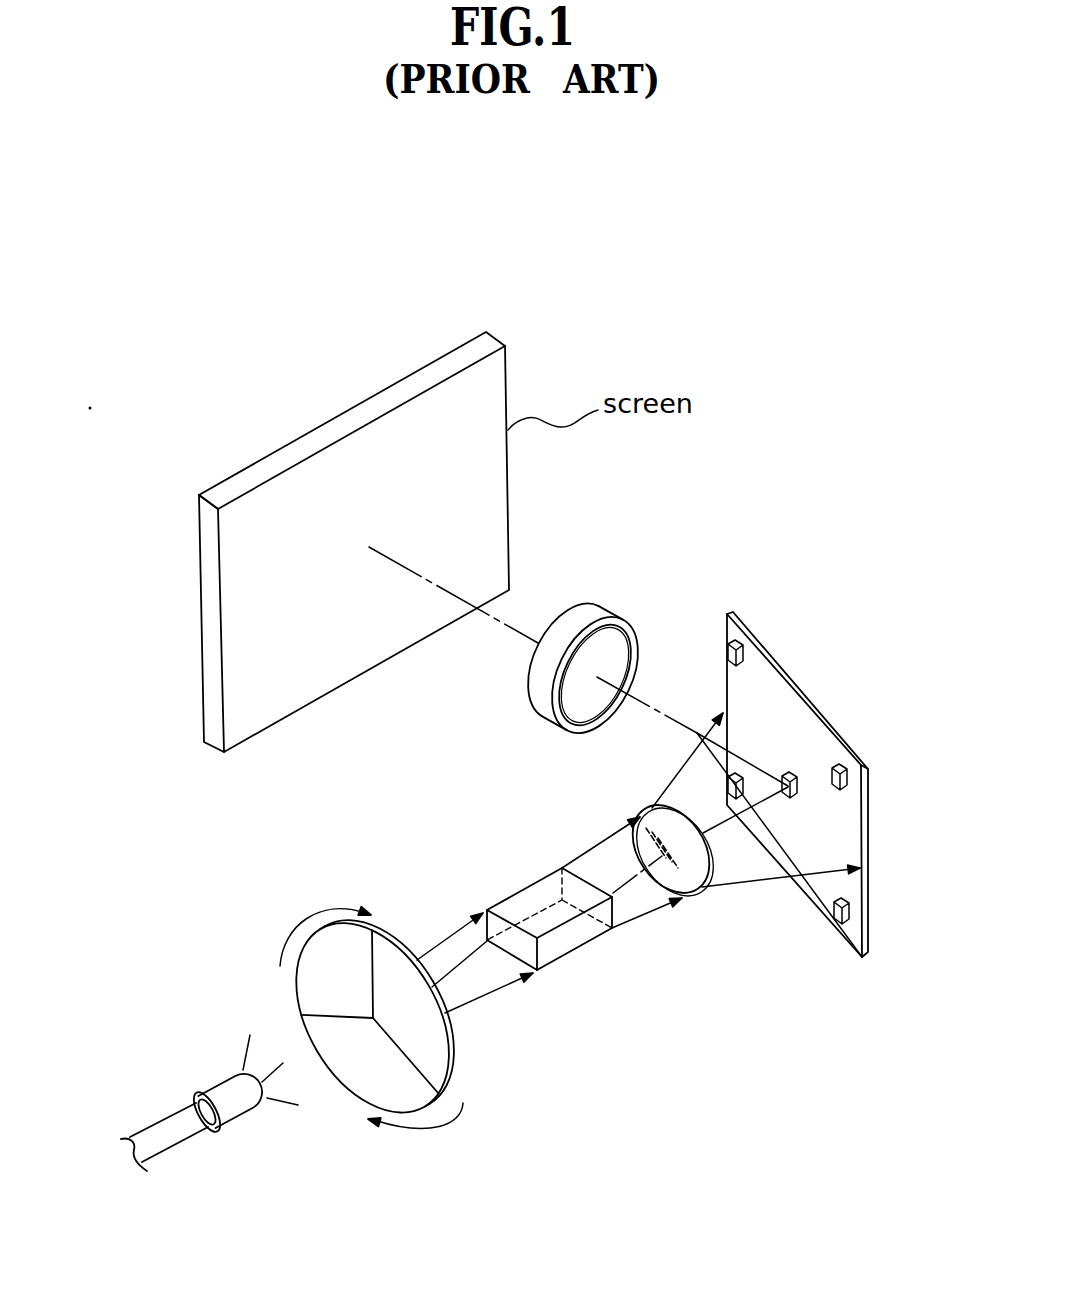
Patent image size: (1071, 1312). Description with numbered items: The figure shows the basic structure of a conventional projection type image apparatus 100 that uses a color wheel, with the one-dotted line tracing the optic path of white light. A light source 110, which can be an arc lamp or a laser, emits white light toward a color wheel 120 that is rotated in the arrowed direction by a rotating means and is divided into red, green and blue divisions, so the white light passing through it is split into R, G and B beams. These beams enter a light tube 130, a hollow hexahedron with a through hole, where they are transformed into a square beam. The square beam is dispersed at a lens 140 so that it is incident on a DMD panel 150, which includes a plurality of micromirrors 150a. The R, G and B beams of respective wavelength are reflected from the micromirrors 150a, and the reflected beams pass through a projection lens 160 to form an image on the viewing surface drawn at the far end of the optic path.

The projection type image apparatus 100 is at (297, 253).
The light source 110 is at (222, 1093).
The color wheel 120 is at (447, 1033).
The light tube 130 is at (522, 891).
The lens 140 is at (710, 866).
The DMD panel 150 is at (828, 727).
The micromirrors 150a is at (788, 772).
The projection lens 160 is at (592, 610).